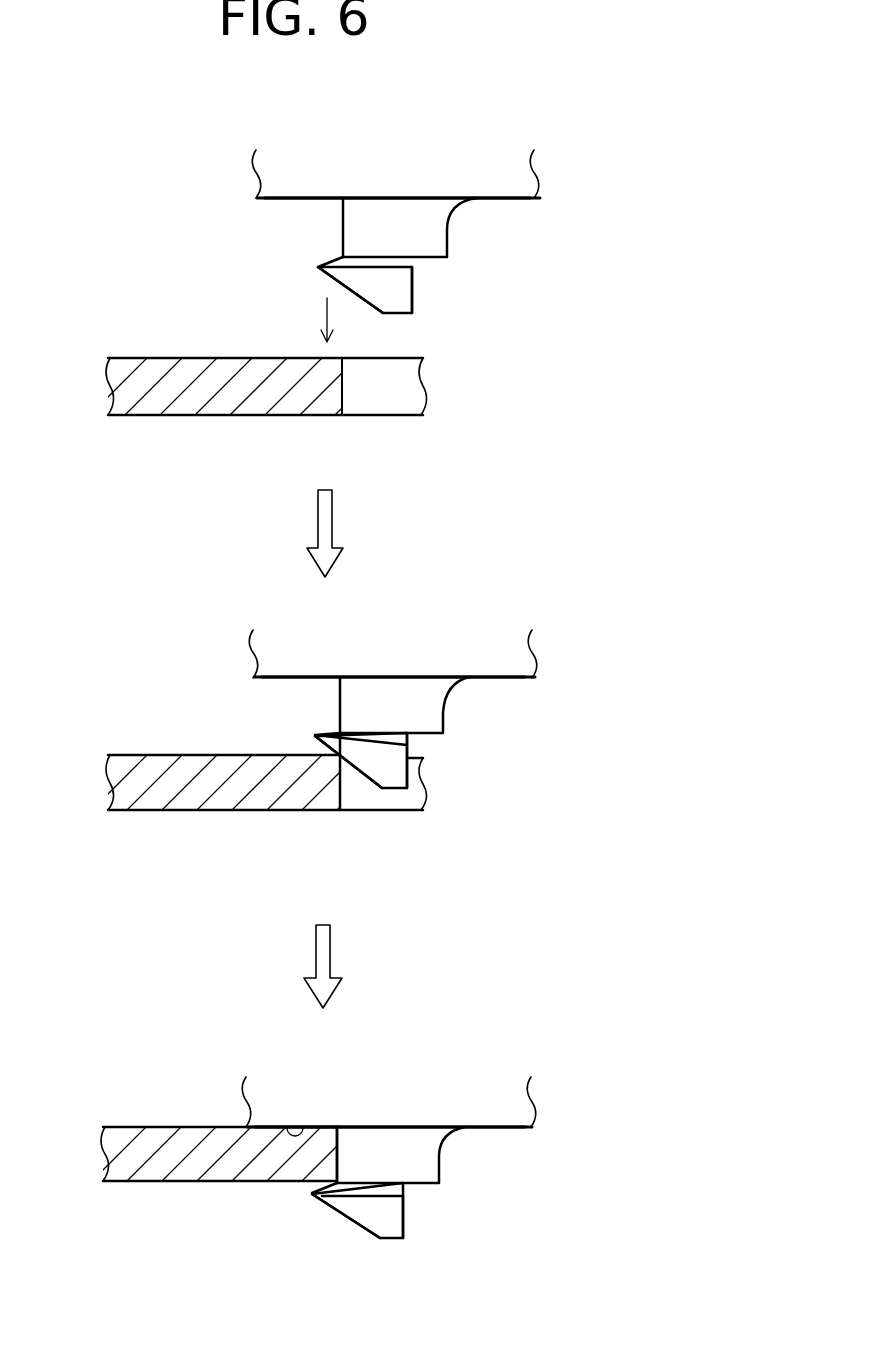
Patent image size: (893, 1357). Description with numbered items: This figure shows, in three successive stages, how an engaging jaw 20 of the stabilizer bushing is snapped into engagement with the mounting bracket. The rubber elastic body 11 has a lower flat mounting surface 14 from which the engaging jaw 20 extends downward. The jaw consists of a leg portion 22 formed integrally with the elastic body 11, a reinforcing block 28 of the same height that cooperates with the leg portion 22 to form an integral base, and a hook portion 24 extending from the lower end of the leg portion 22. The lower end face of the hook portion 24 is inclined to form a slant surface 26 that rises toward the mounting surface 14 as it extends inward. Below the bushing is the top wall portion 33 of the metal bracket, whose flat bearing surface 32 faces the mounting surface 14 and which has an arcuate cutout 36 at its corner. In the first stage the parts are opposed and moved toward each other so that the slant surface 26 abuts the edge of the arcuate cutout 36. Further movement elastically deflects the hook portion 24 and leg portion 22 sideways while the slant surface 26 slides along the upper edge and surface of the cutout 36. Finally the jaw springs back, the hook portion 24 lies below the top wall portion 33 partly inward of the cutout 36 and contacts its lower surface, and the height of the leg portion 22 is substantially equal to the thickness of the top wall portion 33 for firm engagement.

The elastic body 11 is at (522, 182).
The mounting surface 14 is at (287, 200).
The engaging jaw 20 is at (428, 297).
The leg portion 22 is at (357, 228).
The hook portion 24 is at (403, 286).
The slant surface 26 is at (362, 305).
The reinforcing block 28 is at (428, 225).
The bearing surface 32 is at (214, 358).
The top wall portion 33 is at (174, 403).
The arcuate cutout 36 is at (343, 388).